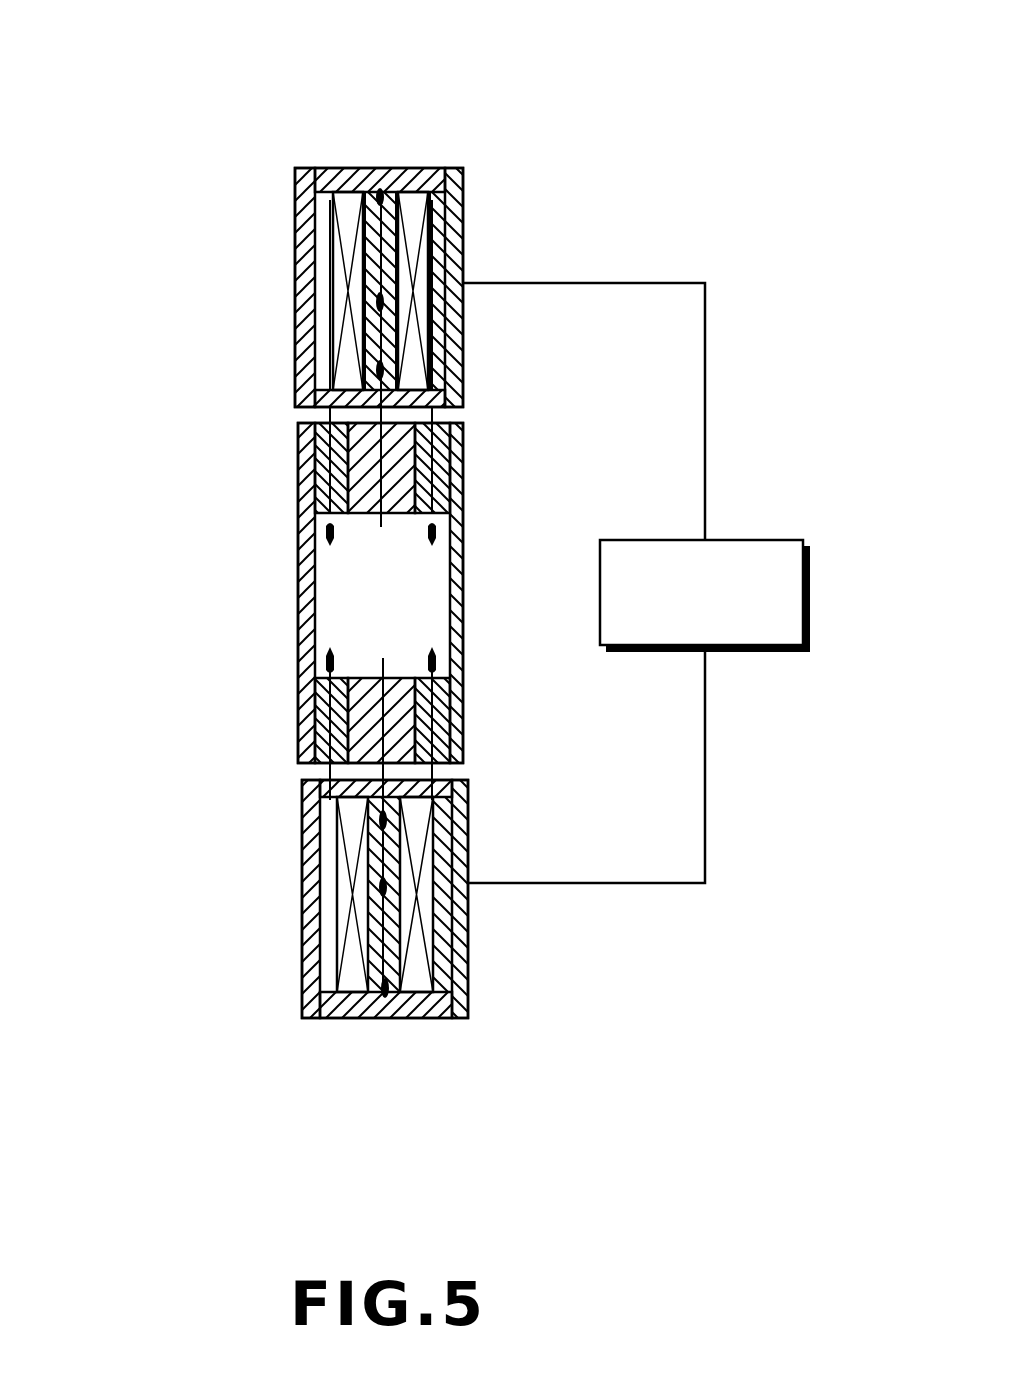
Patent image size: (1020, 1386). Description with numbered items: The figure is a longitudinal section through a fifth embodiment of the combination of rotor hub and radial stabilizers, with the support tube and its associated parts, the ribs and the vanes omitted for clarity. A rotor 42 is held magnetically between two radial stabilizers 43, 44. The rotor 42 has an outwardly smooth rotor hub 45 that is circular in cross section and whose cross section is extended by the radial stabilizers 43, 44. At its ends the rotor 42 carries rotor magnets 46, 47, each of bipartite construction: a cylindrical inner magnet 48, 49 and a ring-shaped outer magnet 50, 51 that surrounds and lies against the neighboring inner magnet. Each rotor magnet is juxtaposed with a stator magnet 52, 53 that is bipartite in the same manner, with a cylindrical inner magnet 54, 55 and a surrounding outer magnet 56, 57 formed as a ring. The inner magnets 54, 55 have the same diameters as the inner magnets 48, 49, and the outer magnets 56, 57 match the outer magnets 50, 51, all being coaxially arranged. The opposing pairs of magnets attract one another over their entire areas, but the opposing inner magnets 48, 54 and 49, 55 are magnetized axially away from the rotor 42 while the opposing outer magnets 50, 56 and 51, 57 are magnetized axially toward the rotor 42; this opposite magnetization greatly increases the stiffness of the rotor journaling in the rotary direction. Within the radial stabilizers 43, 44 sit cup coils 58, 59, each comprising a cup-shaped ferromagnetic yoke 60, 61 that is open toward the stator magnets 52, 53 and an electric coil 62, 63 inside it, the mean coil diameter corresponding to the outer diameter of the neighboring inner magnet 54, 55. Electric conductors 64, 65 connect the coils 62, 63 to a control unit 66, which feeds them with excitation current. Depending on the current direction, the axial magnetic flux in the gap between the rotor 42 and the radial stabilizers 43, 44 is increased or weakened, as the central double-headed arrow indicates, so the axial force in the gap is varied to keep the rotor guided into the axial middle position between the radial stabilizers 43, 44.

The rotor 42 is at (340, 571).
The radial stabilizer 43 is at (387, 213).
The radial stabilizer 44 is at (384, 982).
The rotor hub 45 is at (298, 648).
The rotor magnet 46 is at (288, 462).
The rotor magnet 47 is at (288, 721).
The inner magnet 48 is at (400, 482).
The inner magnet 49 is at (400, 716).
The outer magnet 50 is at (455, 438).
The outer magnet 51 is at (455, 745).
The stator magnet 52 is at (290, 392).
The stator magnet 53 is at (292, 798).
The inner magnet 54 is at (415, 385).
The inner magnet 55 is at (405, 803).
The outer magnet 56 is at (335, 383).
The outer magnet 57 is at (340, 805).
The cup coil 58 is at (410, 150).
The cup coil 59 is at (345, 1038).
The ferromagnetic yoke 60 is at (338, 178).
The ferromagnetic yoke 61 is at (440, 1020).
The electric coil 62 is at (458, 238).
The electric coil 63 is at (345, 955).
The electric conductor 64 is at (648, 283).
The electric conductor 65 is at (670, 884).
The control unit 66 is at (764, 548).